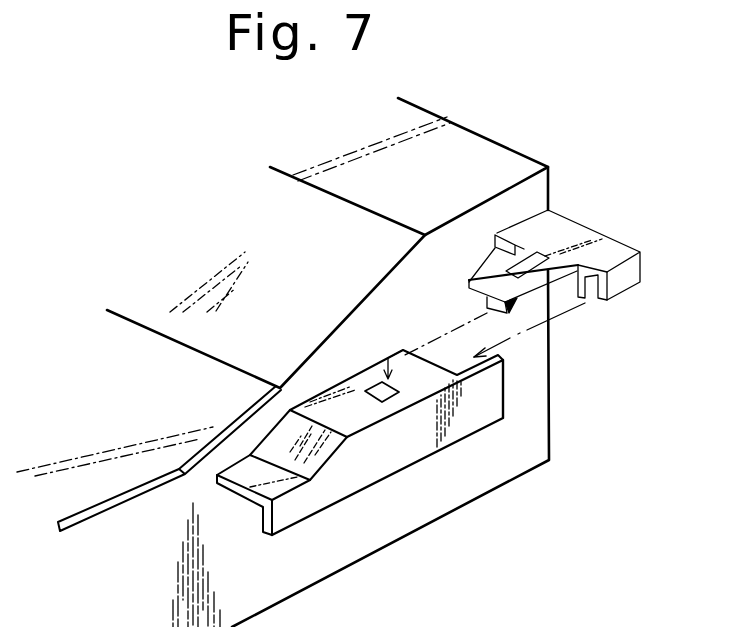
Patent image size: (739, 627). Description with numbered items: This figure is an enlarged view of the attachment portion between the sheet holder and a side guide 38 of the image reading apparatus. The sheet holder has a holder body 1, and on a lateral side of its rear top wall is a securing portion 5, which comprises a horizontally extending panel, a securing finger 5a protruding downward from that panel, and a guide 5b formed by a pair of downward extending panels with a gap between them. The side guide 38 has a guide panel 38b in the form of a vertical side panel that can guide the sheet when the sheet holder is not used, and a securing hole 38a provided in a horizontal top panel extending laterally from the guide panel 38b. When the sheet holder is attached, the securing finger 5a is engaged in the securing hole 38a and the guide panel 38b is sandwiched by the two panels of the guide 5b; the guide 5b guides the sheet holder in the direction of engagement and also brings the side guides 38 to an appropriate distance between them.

The holder body 1 is at (455, 152).
The securing portion 5 is at (584, 283).
The securing finger 5a is at (517, 300).
The guide 5b is at (627, 280).
The side guide 38 is at (404, 475).
The securing hole 38a is at (398, 395).
The guide panel 38b is at (478, 410).